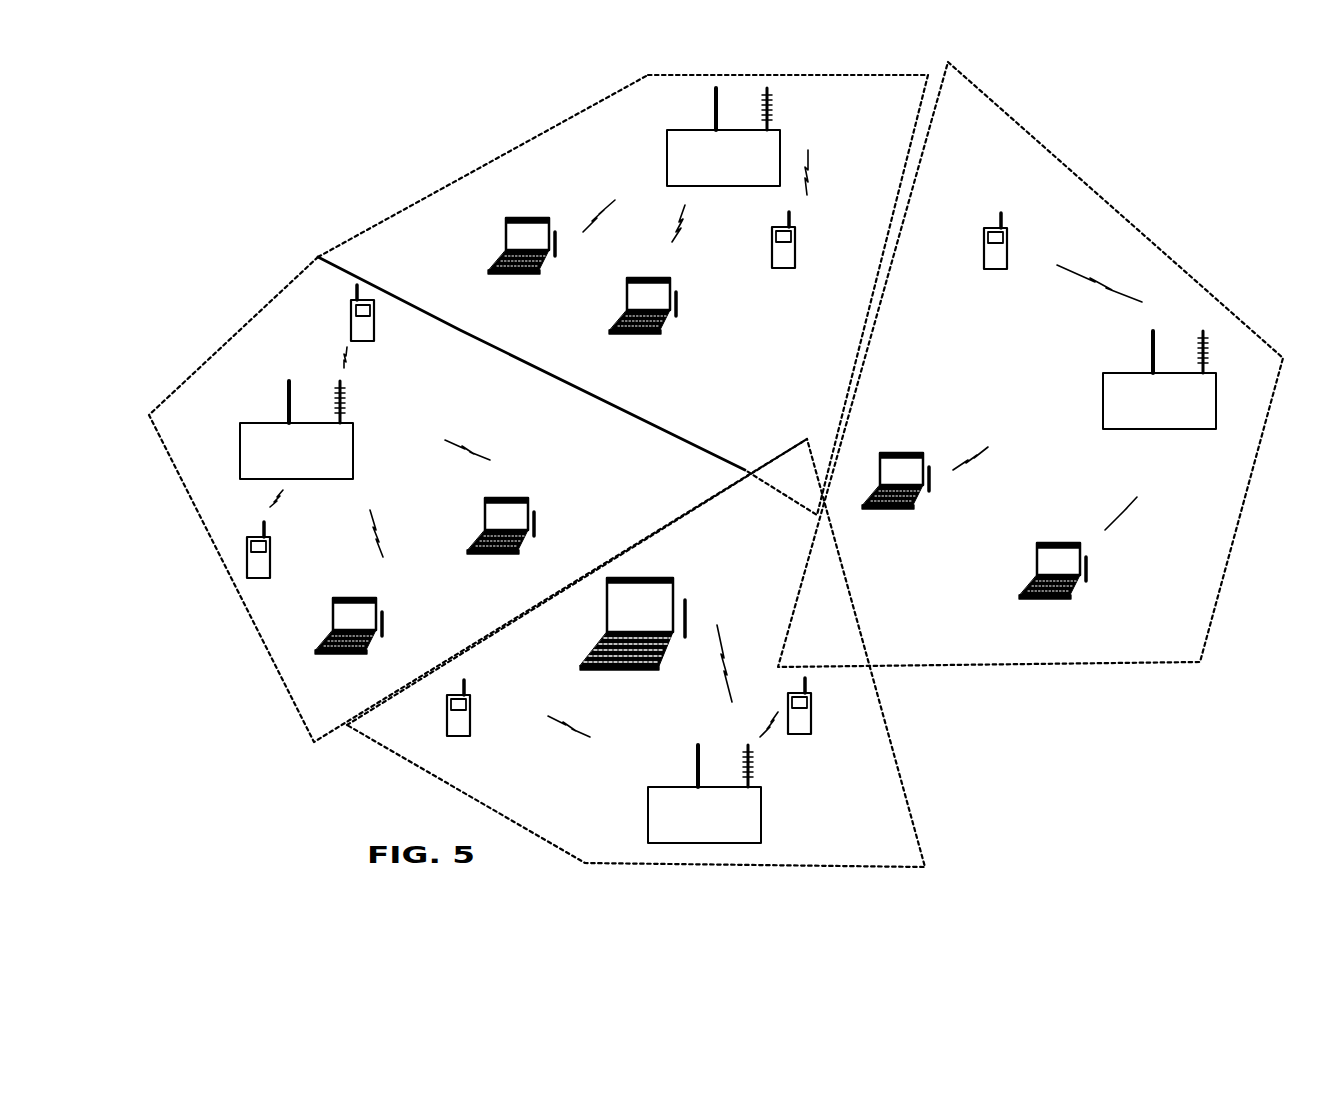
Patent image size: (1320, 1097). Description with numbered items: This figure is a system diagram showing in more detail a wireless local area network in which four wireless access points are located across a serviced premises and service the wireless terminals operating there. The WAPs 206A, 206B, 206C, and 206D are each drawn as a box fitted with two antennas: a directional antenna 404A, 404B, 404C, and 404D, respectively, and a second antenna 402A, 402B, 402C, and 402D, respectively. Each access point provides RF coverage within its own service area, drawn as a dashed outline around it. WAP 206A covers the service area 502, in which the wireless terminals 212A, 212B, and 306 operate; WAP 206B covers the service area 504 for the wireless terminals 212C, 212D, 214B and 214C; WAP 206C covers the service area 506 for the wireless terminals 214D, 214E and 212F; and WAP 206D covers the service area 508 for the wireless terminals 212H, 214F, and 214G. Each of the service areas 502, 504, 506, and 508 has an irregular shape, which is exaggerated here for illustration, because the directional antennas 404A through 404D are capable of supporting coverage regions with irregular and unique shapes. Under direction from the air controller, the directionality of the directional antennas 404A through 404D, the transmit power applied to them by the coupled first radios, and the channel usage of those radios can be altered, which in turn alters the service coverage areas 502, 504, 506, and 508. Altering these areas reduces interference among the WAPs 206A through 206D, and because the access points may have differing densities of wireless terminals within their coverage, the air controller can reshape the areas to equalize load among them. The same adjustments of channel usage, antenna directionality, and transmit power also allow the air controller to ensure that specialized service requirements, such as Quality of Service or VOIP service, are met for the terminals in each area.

The WAP 206A is at (648, 810).
The WAP 206B is at (240, 446).
The WAP 206C is at (1102, 396).
The WAP 206D is at (666, 152).
The second antenna 402A is at (696, 770).
The second antenna 402B is at (287, 406).
The second antenna 402C is at (1150, 360).
The second antenna 402D is at (714, 114).
The directional antenna 404A is at (751, 784).
The directional antenna 404B is at (342, 420).
The directional antenna 404C is at (1205, 368).
The directional antenna 404D is at (769, 127).
The wireless terminal 212A is at (470, 728).
The wireless terminal 212B is at (810, 723).
The wireless terminal 212C is at (269, 568).
The wireless terminal 212D is at (351, 330).
The wireless terminal 212F is at (984, 259).
The wireless terminal 212H is at (796, 260).
The wireless terminal 214B is at (500, 498).
The wireless terminal 214C is at (348, 598).
The wireless terminal 214D is at (1058, 543).
The wireless terminal 214E is at (893, 453).
The wireless terminal 214F is at (519, 218).
The wireless terminal 214G is at (641, 278).
The wireless terminal 306 is at (654, 578).
The service area 502 is at (895, 752).
The service area 504 is at (240, 336).
The service area 506 is at (1157, 247).
The service area 508 is at (448, 187).